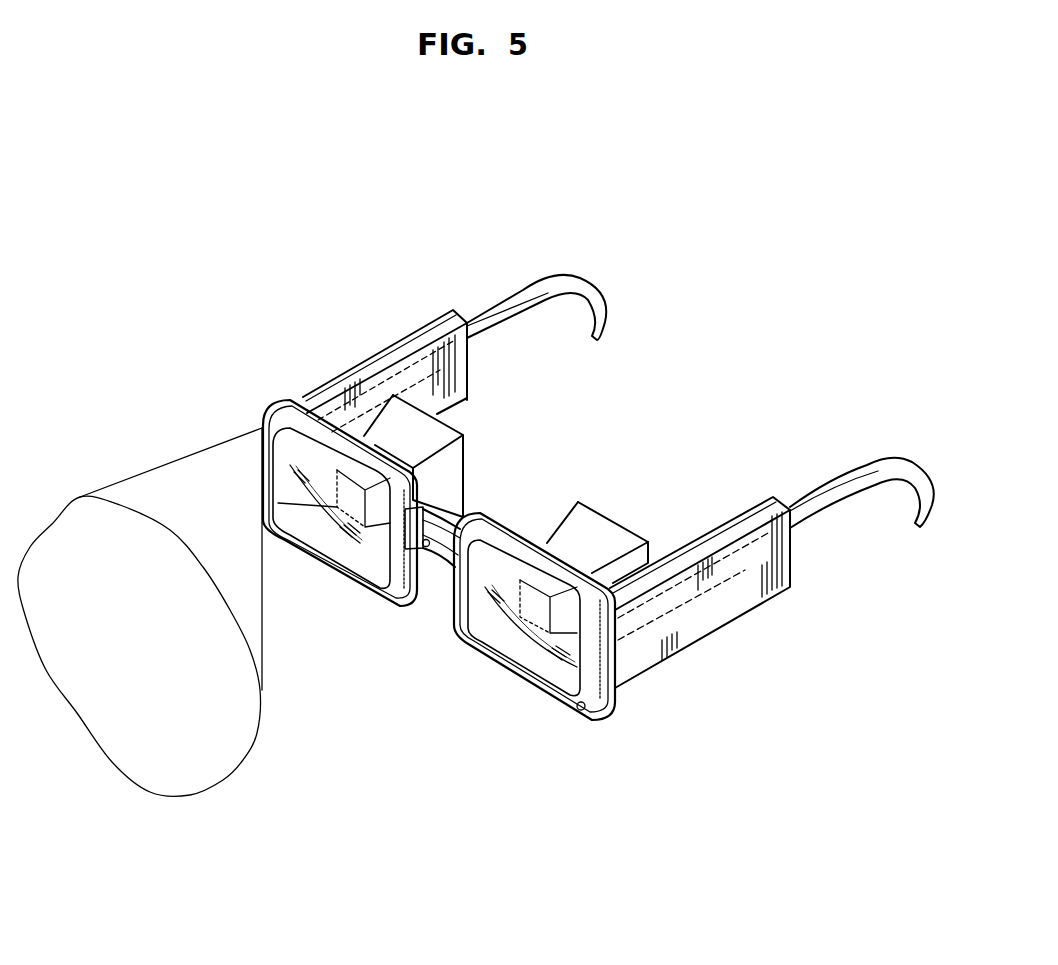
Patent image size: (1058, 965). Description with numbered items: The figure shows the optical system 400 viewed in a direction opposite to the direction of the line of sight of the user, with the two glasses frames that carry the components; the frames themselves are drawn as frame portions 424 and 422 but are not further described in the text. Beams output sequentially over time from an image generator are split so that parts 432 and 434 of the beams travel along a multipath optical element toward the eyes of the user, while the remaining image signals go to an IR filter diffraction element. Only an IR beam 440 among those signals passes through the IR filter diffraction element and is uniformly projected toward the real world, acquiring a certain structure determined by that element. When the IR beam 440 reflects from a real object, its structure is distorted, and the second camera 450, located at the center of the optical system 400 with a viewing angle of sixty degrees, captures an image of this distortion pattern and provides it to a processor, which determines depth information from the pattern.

The optical system 400 is at (584, 515).
The second frame 422 is at (573, 709).
The first frame 424 is at (282, 545).
The part of beams 432 is at (617, 523).
The part of beams 434 is at (467, 452).
The IR beam 440 is at (152, 756).
The second camera 450 is at (418, 548).